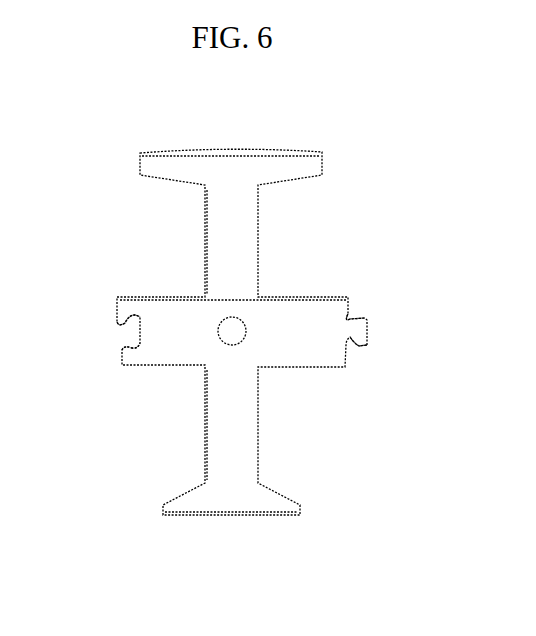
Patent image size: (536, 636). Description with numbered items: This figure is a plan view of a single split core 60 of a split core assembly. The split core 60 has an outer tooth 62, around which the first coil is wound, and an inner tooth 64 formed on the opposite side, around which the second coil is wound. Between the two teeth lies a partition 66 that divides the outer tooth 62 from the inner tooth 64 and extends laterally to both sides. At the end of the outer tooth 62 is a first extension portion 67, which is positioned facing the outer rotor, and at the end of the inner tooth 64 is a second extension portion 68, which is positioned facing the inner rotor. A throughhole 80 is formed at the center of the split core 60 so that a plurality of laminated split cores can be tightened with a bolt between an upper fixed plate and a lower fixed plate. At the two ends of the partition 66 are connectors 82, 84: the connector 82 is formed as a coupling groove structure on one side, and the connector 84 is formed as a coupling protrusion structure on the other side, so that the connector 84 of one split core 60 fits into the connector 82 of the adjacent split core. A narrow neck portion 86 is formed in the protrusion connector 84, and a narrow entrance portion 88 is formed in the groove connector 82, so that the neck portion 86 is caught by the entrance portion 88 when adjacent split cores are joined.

The split core 60 is at (312, 144).
The outer tooth 62 is at (257, 233).
The inner tooth 64 is at (253, 422).
The partition 66 is at (300, 297).
The first extension portion 67 is at (172, 163).
The second extension portion 68 is at (272, 507).
The throughhole 80 is at (232, 331).
The connector 82 is at (137, 350).
The connector 84 is at (355, 338).
The neck portion 86 is at (350, 320).
The entrance portion 88 is at (120, 343).